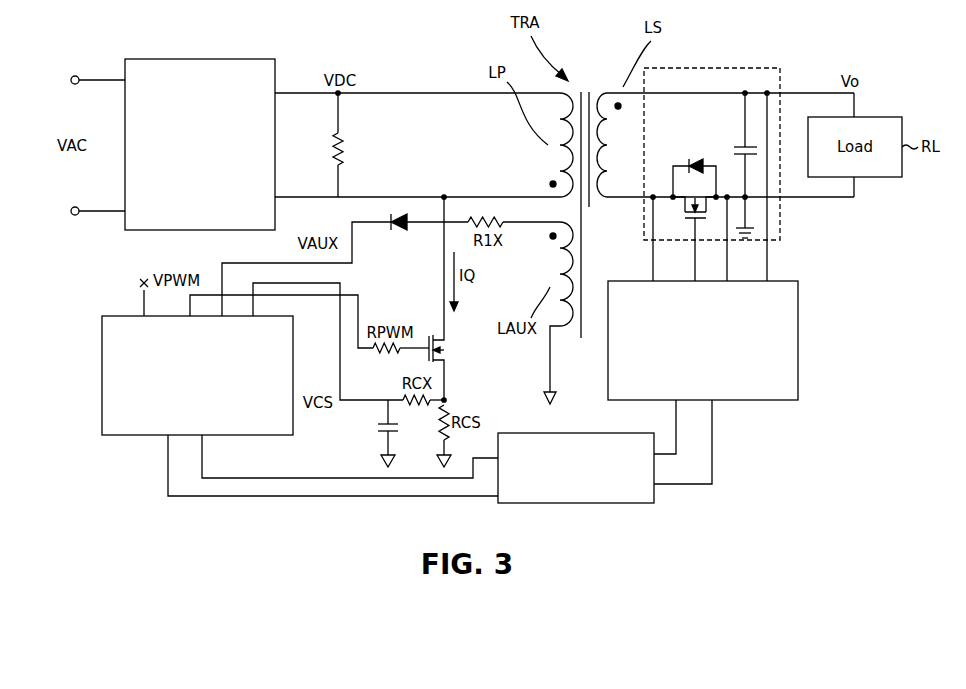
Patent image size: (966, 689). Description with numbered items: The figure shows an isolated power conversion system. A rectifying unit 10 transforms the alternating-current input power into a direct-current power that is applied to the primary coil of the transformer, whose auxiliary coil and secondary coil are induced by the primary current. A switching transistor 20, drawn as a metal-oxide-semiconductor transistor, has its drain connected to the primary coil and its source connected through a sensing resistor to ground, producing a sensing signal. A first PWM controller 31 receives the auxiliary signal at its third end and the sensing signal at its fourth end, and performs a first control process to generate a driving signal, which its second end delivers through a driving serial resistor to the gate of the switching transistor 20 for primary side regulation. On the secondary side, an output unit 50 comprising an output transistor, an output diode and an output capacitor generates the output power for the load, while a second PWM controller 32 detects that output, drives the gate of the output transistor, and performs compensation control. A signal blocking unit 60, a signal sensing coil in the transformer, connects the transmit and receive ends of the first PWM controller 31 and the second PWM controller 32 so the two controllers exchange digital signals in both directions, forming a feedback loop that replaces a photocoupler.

The rectifying unit 10 is at (200, 59).
The switching transistor 20 is at (432, 328).
The first PWM controller 31 is at (102, 375).
The second PWM controller 32 is at (798, 342).
The output unit 50 is at (712, 68).
The signal blocking unit 60 is at (575, 503).